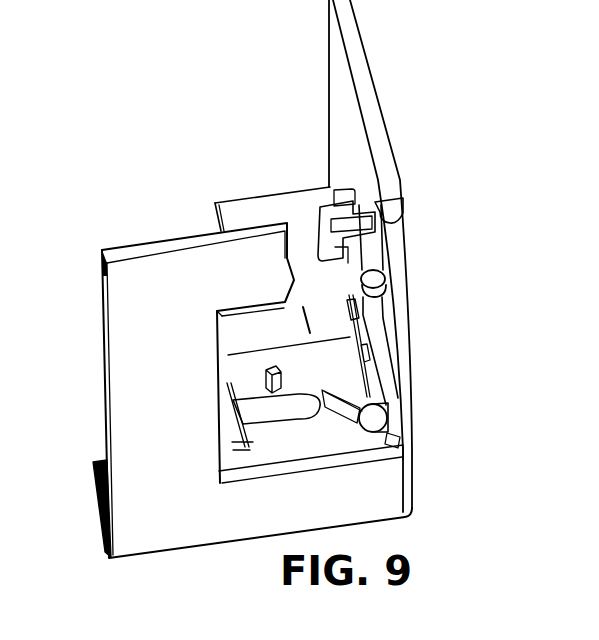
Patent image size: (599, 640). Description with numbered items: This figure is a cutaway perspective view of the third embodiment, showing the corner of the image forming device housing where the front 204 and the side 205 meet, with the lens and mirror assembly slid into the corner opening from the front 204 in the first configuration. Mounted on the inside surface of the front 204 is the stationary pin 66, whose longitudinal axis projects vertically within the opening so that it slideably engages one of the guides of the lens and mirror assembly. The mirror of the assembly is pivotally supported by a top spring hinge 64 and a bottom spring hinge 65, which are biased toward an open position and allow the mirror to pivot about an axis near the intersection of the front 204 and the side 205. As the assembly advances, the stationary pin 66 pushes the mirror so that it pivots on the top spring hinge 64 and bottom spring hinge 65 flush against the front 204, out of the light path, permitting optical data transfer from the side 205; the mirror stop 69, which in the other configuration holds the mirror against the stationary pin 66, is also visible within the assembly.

The front 204 is at (378, 100).
The side 205 is at (172, 527).
The stationary pin 66 is at (403, 200).
The top spring hinge 64 is at (383, 283).
The bottom spring hinge 65 is at (392, 424).
The mirror stop 69 is at (281, 372).